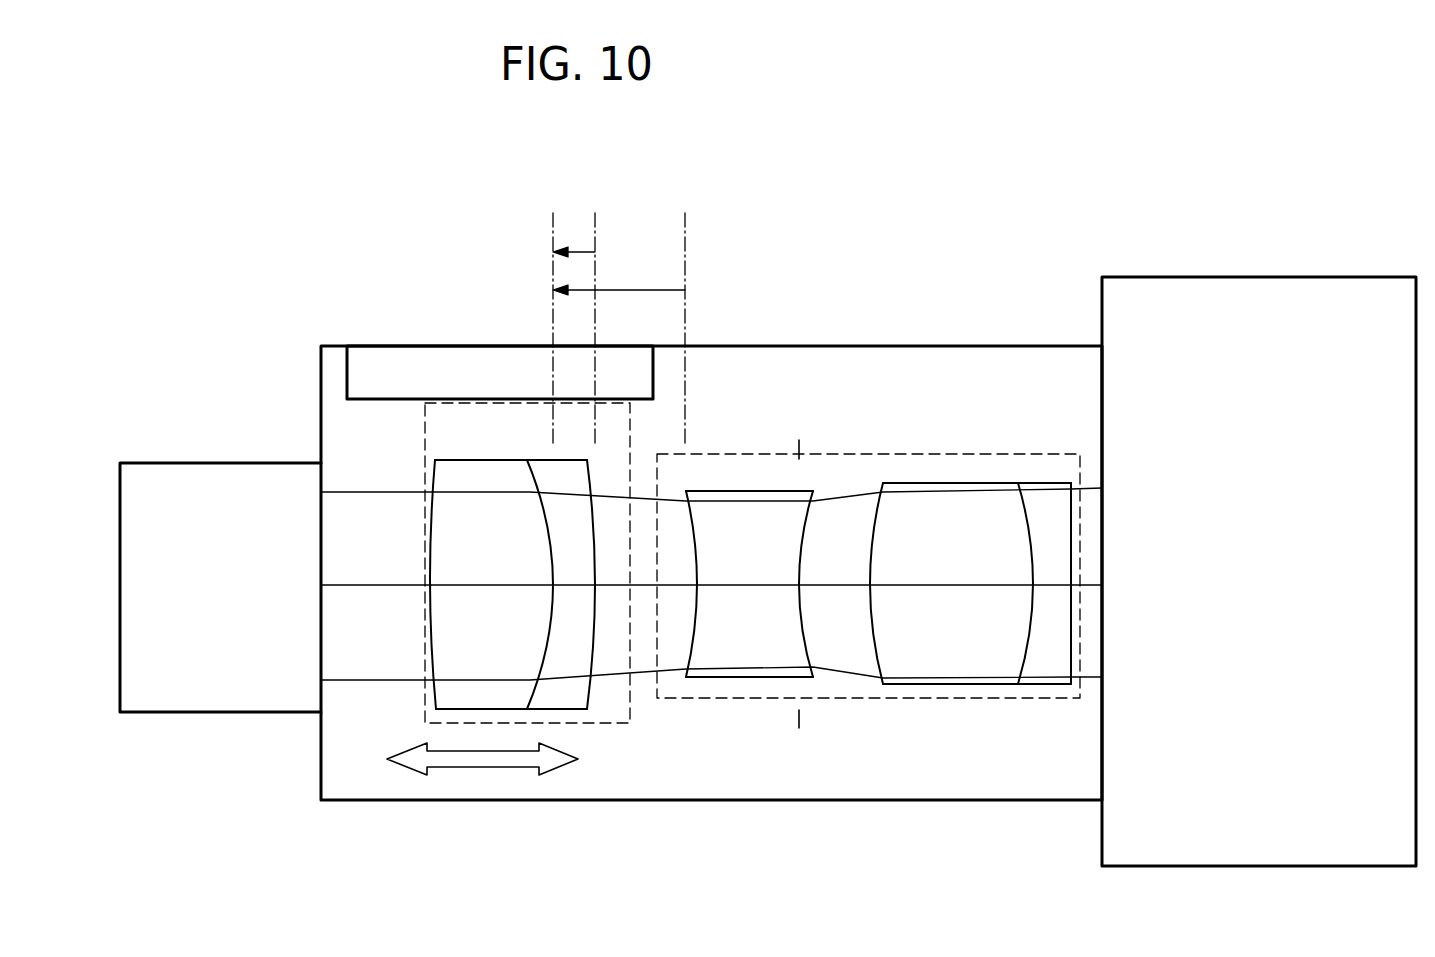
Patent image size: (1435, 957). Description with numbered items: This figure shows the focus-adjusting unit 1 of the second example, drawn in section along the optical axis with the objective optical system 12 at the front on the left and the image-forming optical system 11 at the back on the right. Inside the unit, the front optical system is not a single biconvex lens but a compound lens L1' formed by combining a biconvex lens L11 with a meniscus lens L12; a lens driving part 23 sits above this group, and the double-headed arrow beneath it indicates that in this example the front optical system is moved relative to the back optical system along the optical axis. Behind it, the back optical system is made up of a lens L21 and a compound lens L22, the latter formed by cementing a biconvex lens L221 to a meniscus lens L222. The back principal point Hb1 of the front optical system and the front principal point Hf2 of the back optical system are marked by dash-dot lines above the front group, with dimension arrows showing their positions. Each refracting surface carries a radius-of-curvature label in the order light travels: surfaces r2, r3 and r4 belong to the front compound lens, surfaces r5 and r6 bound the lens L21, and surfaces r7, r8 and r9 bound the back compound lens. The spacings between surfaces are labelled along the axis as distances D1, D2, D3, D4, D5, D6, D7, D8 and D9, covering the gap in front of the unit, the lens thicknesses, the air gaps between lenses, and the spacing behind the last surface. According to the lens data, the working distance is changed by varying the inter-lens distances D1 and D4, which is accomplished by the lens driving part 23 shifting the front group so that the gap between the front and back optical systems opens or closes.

The focus-adjusting unit 1 is at (827, 172).
The image-forming optical system 11 is at (1263, 276).
The objective optical system 12 is at (232, 462).
The lens driving part 23 is at (347, 368).
The compound lens L1' is at (494, 477).
The biconvex lens L11 is at (452, 474).
The meniscus lens L12 is at (564, 506).
The lens L21 is at (767, 573).
The compound lens L22 is at (1085, 297).
The biconvex lens L221 is at (924, 489).
The meniscus lens L222 is at (1056, 530).
The back principal point Hb1 is at (574, 245).
The front principal point Hf2 is at (619, 328).
The inter-lens distance D1 is at (363, 584).
The distance between surfaces D2 is at (486, 584).
The distance between surfaces D3 is at (570, 584).
The inter-lens distance D4 is at (643, 584).
The distance between surfaces D5 is at (746, 584).
The distance between surfaces D6 is at (834, 584).
The distance between surfaces D7 is at (950, 584).
The distance between surfaces D8 is at (1056, 578).
The distance between surfaces D9 is at (1082, 588).
The lens surface r2 is at (431, 645).
The lens surface r3 is at (514, 584).
The lens surface r4 is at (588, 688).
The lens surface r5 is at (691, 656).
The lens surface r6 is at (803, 640).
The lens surface r7 is at (870, 612).
The lens surface r8 is at (1000, 583).
The lens surface r9 is at (1080, 625).